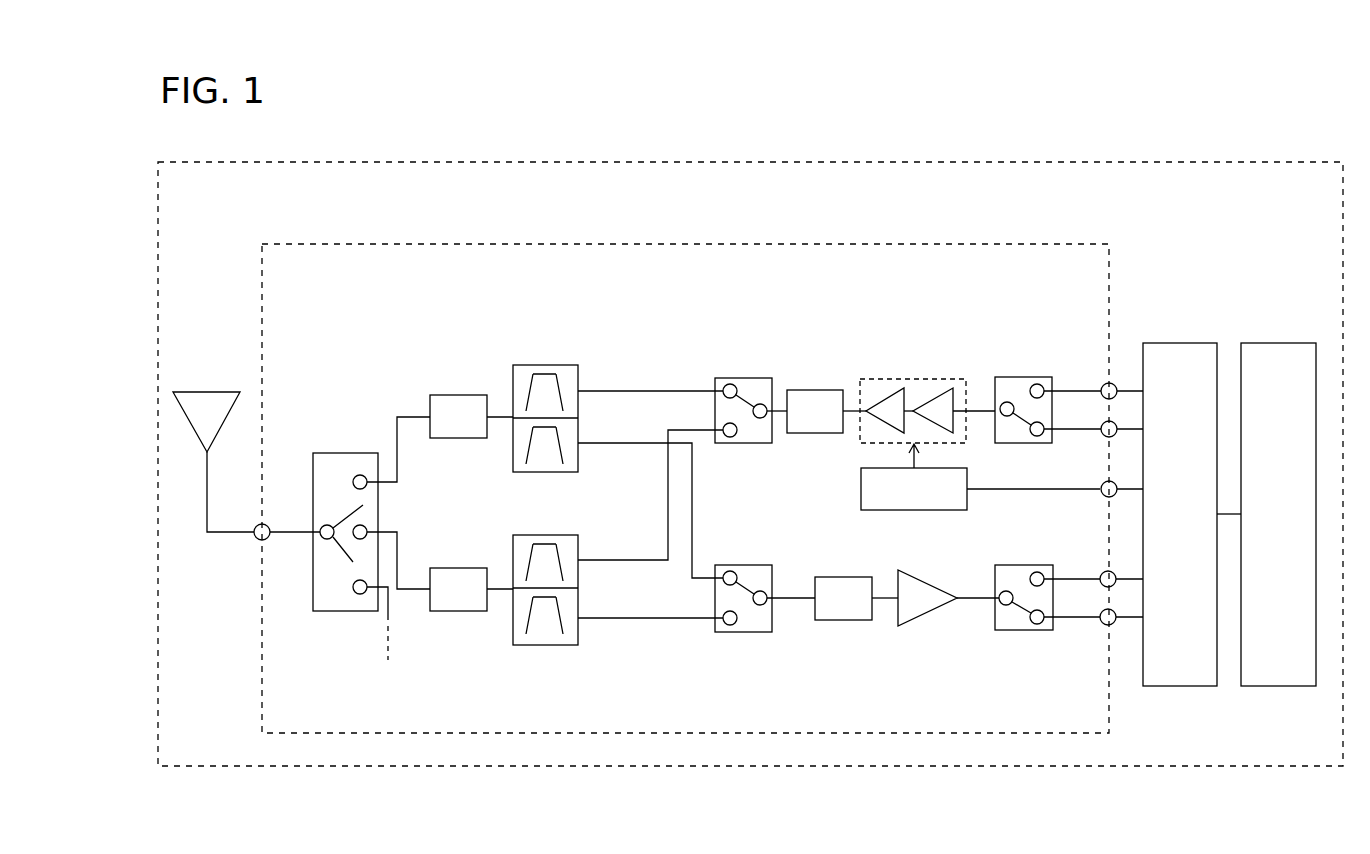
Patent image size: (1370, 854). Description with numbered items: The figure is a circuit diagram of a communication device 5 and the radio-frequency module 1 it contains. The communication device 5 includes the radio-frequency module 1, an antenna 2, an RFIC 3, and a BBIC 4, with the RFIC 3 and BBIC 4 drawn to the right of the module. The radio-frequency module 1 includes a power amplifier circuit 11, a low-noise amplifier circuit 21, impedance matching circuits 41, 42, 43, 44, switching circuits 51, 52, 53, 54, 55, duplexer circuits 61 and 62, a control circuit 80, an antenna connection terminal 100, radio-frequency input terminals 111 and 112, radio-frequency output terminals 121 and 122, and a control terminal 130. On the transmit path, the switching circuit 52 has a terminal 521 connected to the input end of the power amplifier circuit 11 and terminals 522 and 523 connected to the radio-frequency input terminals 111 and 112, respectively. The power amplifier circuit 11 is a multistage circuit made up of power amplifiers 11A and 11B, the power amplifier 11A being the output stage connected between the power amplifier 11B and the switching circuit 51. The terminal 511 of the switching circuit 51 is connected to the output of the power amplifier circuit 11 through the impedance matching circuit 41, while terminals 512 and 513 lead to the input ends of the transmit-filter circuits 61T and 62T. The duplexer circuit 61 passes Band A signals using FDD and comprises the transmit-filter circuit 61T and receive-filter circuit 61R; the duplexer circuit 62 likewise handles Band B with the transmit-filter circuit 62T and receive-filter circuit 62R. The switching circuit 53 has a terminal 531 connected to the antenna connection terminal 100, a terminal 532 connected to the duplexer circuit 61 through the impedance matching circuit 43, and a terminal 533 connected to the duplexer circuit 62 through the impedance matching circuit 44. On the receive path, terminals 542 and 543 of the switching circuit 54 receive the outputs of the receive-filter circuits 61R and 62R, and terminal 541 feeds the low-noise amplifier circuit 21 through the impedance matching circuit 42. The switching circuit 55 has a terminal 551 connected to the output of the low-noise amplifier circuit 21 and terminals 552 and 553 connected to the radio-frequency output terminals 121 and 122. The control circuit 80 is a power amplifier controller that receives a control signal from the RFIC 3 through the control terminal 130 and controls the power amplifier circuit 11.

The radio-frequency module 1 is at (1067, 244).
The antenna 2 is at (197, 392).
The RFIC 3 is at (1178, 343).
The BBIC 4 is at (1277, 343).
The communication device 5 is at (1303, 162).
The power amplifier circuit 11 is at (911, 385).
The power amplifier 11A is at (895, 388).
The power amplifier 11B is at (943, 388).
The low-noise amplifier circuit 21 is at (925, 583).
The impedance matching circuit 41 is at (807, 390).
The impedance matching circuit 42 is at (835, 577).
The impedance matching circuit 43 is at (445, 395).
The impedance matching circuit 44 is at (445, 568).
The switching circuit 51 is at (751, 407).
The terminal 511 is at (766, 418).
The terminal 512 is at (727, 386).
The terminal 513 is at (727, 436).
The switching circuit 52 is at (1022, 406).
The terminal 521 is at (1003, 416).
The terminal 522 is at (1038, 384).
The terminal 523 is at (1037, 436).
The switching circuit 53 is at (349, 508).
The terminal 531 is at (322, 538).
The terminal 532 is at (358, 474).
The terminal 533 is at (367, 528).
The switching circuit 54 is at (760, 593).
The terminal 541 is at (766, 604).
The terminal 542 is at (727, 573).
The terminal 543 is at (727, 624).
The switching circuit 55 is at (1014, 590).
The terminal 551 is at (1003, 605).
The terminal 552 is at (1040, 572).
The terminal 553 is at (1035, 624).
The duplexer circuit 61 is at (606, 423).
The transmit-filter circuit 61T is at (580, 383).
The receive-filter circuit 61R is at (585, 454).
The duplexer circuit 62 is at (606, 591).
The transmit-filter circuit 62T is at (580, 555).
The receive-filter circuit 62R is at (585, 629).
The control circuit 80 is at (861, 489).
The antenna connection terminal 100 is at (257, 540).
The radio-frequency input terminal 111 is at (1104, 386).
The radio-frequency input terminal 112 is at (1103, 424).
The radio-frequency output terminal 121 is at (1104, 573).
The radio-frequency output terminal 122 is at (1102, 612).
The control terminal 130 is at (1104, 483).